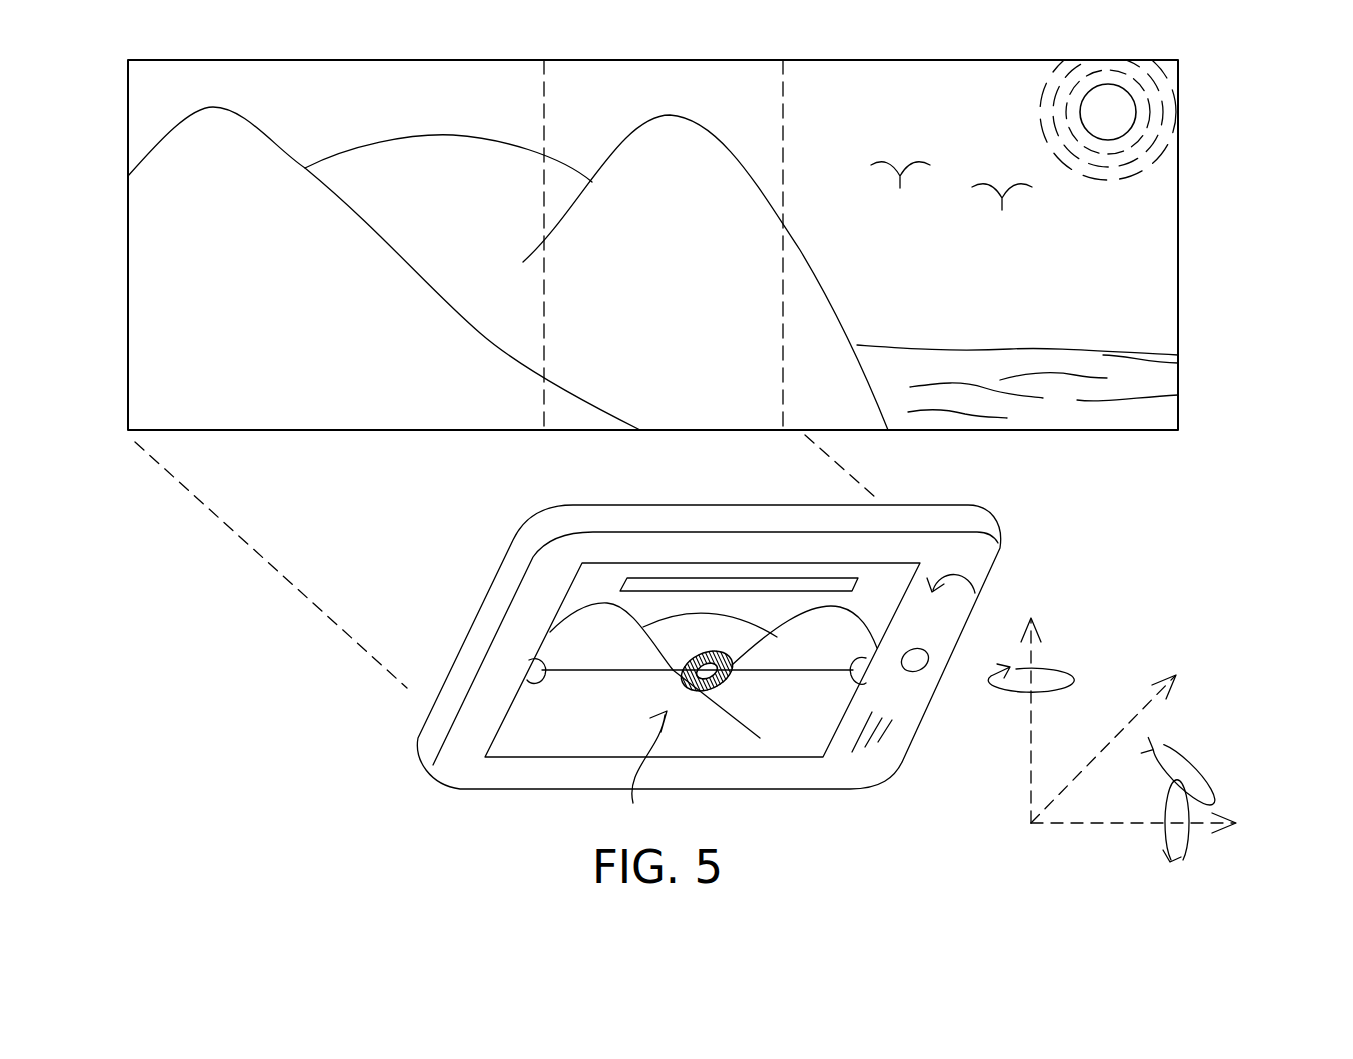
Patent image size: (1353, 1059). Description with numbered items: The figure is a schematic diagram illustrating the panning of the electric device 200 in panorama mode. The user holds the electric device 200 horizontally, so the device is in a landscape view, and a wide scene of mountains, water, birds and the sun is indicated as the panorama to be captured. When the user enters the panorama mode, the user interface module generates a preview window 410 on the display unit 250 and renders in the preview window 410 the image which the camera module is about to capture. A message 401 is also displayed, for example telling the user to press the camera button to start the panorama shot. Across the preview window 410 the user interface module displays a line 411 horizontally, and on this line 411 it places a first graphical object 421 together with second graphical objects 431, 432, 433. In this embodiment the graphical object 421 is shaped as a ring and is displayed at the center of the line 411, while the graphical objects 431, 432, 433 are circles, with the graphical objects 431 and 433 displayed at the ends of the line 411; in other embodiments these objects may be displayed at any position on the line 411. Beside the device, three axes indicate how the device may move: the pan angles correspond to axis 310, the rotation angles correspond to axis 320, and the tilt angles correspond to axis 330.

The electric device 200 is at (462, 767).
The display unit 250 is at (757, 757).
The message 401 is at (653, 585).
The preview window 410 is at (636, 770).
The line 411 is at (580, 672).
The graphical object 421 is at (713, 690).
The graphical object 431 is at (855, 697).
The graphical object 432 is at (730, 680).
The graphical object 433 is at (528, 688).
The axis 310 is at (1030, 737).
The axis 320 is at (1110, 735).
The axis 330 is at (1123, 817).